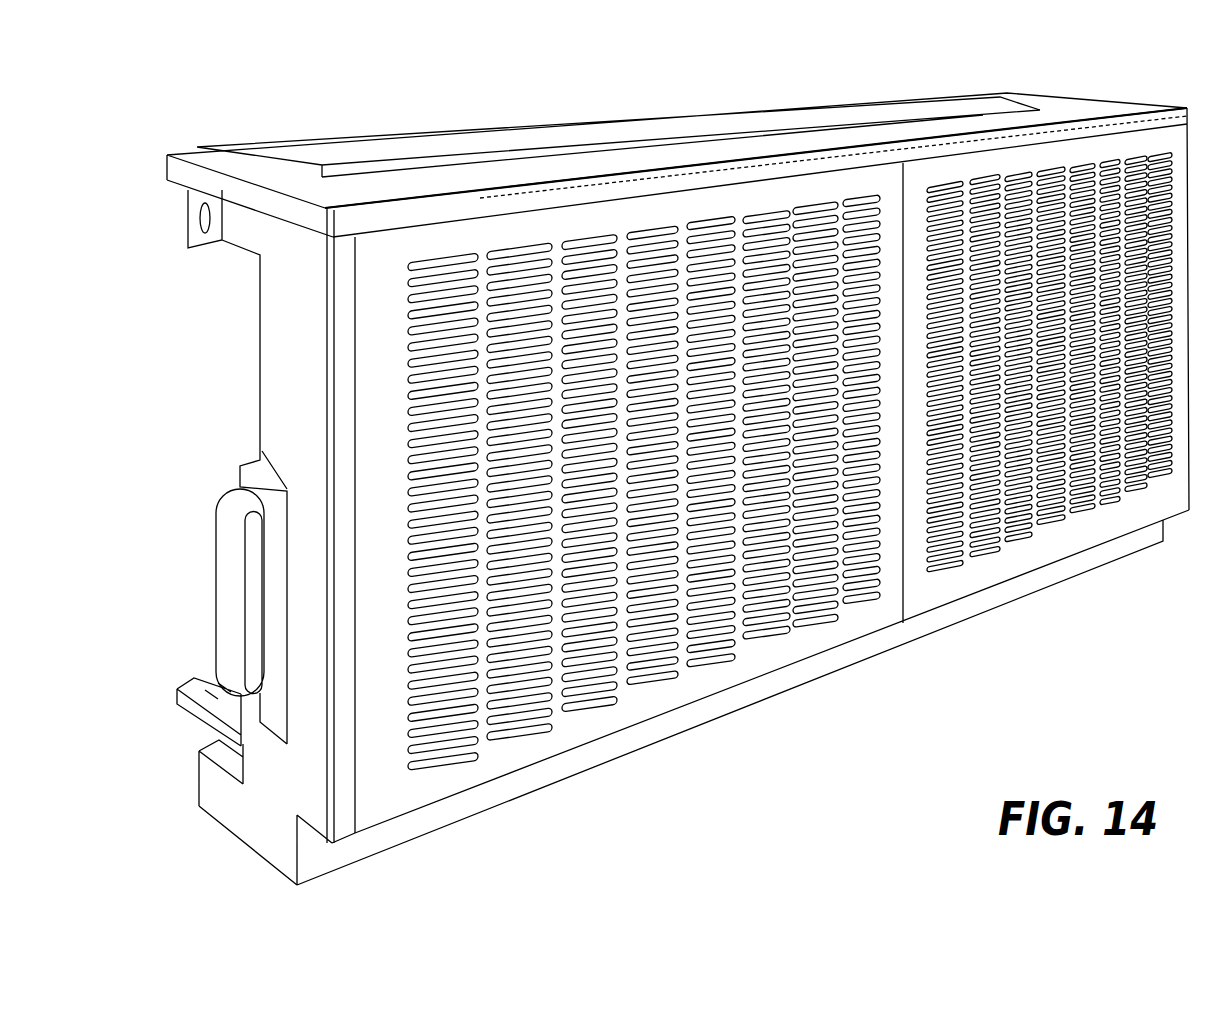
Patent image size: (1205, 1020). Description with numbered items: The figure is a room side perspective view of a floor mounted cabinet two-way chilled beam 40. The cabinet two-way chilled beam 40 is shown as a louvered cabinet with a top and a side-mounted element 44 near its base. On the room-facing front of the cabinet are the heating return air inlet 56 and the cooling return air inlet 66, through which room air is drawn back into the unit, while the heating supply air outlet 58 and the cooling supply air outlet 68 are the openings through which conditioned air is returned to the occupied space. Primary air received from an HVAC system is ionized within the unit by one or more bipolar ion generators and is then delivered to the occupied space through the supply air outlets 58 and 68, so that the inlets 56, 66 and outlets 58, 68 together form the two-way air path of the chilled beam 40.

The cabinet two-way chilled beam 40 is at (665, 465).
The mounting bracket 44 is at (216, 591).
The heating return air inlet 56 is at (647, 270).
The heating supply air outlet 58 is at (422, 146).
The cooling return air inlet 66 is at (522, 480).
The cooling supply air outlet 68 is at (465, 687).